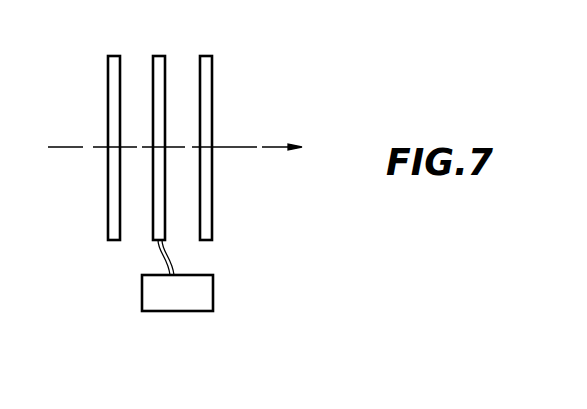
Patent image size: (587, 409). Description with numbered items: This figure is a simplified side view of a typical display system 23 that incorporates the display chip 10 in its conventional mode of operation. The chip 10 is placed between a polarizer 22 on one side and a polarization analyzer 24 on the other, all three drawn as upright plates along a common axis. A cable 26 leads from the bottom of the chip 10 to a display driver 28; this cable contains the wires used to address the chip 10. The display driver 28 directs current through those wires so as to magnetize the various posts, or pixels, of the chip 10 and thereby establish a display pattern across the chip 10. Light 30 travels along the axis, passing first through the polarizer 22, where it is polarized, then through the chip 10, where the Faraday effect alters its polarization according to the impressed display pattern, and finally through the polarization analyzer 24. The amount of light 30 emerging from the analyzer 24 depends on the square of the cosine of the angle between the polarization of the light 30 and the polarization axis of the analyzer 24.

The chip 10 is at (165, 57).
The polarizer 22 is at (107, 60).
The display system 23 is at (243, 110).
The polarization analyzer 24 is at (213, 65).
The cable 26 is at (162, 259).
The display driver 28 is at (213, 292).
The light 30 is at (272, 148).